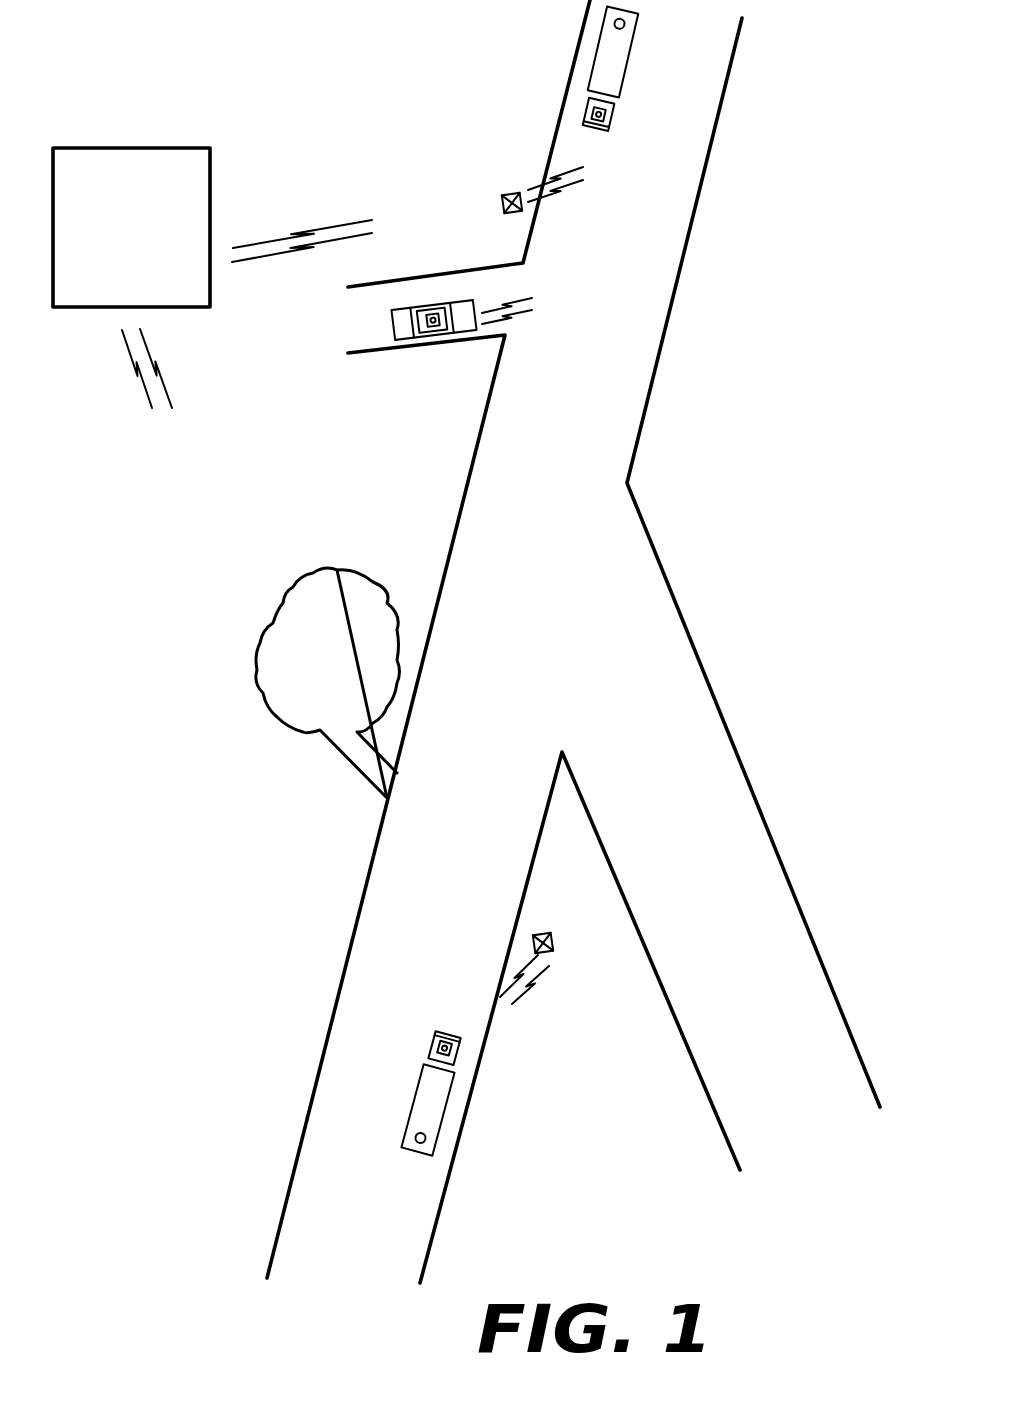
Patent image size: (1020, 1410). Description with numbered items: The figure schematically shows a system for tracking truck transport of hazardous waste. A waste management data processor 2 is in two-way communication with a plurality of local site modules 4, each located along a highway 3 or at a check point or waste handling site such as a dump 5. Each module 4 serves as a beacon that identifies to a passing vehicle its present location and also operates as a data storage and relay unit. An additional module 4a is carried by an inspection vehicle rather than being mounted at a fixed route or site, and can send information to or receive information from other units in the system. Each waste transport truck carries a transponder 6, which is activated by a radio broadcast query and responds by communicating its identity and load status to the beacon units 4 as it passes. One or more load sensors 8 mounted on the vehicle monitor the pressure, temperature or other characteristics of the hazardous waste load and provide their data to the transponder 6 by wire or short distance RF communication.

The waste management data processor 2 is at (143, 292).
The highway 3 is at (579, 407).
The local site module 4 is at (507, 193).
The additional module 4a is at (433, 332).
The dump 5 is at (336, 685).
The transponder 6 is at (612, 115).
The load sensor 8 is at (627, 22).